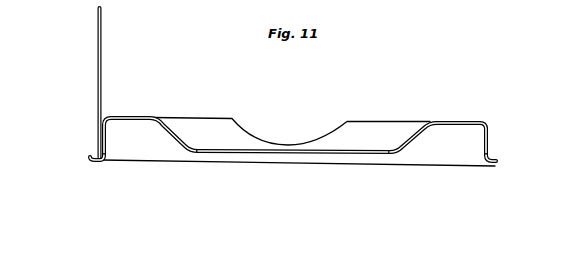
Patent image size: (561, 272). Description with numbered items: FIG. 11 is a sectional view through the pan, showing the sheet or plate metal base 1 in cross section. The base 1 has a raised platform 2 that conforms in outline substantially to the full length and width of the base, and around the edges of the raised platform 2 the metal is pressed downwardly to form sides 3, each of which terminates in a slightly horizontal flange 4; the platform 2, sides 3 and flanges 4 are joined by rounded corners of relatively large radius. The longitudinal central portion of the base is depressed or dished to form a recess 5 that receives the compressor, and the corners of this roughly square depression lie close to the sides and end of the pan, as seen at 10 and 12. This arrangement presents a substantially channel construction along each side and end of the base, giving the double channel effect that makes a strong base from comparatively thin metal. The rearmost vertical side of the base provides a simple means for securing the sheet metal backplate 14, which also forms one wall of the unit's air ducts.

The base 1 is at (60, 141).
The raised platform 2 is at (112, 115).
The sides 3 is at (101, 134).
The horizontal flange 4 is at (97, 157).
The recessed portion 5 is at (203, 150).
The corner of depression 10 is at (137, 115).
The corner of depression 12 is at (453, 122).
The backplate 14 is at (103, 50).